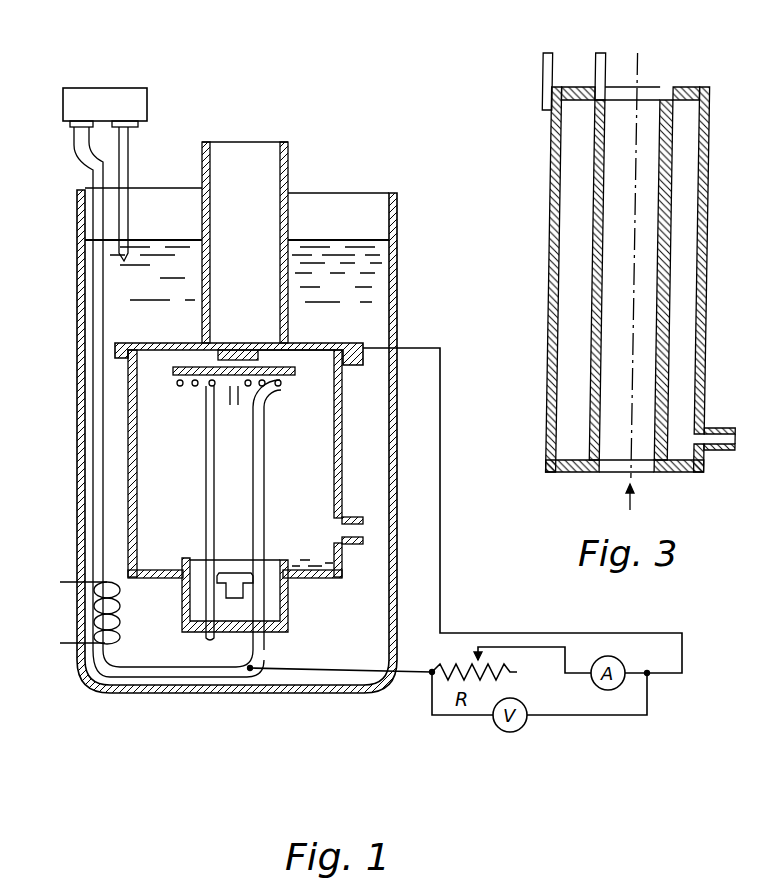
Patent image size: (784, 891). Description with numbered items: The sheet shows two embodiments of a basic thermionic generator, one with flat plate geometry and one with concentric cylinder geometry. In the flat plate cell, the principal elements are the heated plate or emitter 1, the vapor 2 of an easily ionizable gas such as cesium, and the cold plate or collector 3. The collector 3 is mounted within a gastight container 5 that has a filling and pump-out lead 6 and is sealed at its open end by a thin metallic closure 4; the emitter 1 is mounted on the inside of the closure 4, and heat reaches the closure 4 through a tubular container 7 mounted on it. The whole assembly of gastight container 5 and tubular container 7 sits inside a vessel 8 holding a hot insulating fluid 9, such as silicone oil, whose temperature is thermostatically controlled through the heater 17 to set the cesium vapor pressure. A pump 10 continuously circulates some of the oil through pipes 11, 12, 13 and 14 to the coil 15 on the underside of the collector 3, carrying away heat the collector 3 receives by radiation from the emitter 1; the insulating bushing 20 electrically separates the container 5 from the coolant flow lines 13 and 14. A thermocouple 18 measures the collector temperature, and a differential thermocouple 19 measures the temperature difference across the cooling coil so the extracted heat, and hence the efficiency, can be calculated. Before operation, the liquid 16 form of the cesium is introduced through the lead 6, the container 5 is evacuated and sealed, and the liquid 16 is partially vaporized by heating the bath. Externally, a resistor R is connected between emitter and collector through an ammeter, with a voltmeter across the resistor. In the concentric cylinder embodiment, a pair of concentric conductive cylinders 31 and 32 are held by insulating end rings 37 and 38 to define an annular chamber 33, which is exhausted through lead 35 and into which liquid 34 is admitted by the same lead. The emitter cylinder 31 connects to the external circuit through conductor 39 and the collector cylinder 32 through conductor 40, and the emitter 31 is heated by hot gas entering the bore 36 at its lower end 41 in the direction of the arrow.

In FIG. 1, the heated plate (emitter) 1 is at (238, 350).
In FIG. 1, the vapor 2 is at (275, 358).
In FIG. 1, the cold plate (collector) 3 is at (175, 370).
In FIG. 1, the closure 4 is at (115, 346).
In FIG. 1, the gastight container 5 is at (343, 413).
In FIG. 1, the filling and pump-out lead 6 is at (346, 542).
In FIG. 1, the tubular container 7 is at (288, 165).
In FIG. 1, the vessel 8 is at (398, 258).
In FIG. 1, the hot insulating fluid 9 is at (322, 240).
In FIG. 1, the pump 10 is at (147, 106).
In FIG. 1, the pipe 11 is at (130, 170).
In FIG. 1, the pipe 12 is at (85, 152).
In FIG. 1, the pipe (coolant flow line) 13 is at (266, 470).
In FIG. 1, the pipe (coolant flow line) 14 is at (204, 474).
In FIG. 1, the coil 15 is at (193, 387).
In FIG. 1, the liquid 16 is at (315, 565).
In FIG. 1, the heater 17 is at (66, 582).
In FIG. 1, the thermocouple 18 is at (229, 408).
In FIG. 1, the differential thermocouple 19 is at (247, 592).
In FIG. 1, the insulating bushing 20 is at (181, 600).
In FIG. 3, the emitter cylinder 31 is at (595, 163).
In FIG. 3, the collector cylinder 32 is at (551, 200).
In FIG. 3, the annular chamber 33 is at (698, 224).
In FIG. 3, the liquid 34 is at (598, 460).
In FIG. 3, the lead 35 is at (720, 430).
In FIG. 3, the bore 36 is at (607, 319).
In FIG. 3, the insulating end ring 37 is at (680, 473).
In FIG. 3, the insulating end ring 38 is at (688, 92).
In FIG. 3, the conductor 39 is at (603, 52).
In FIG. 3, the conductor 40 is at (543, 72).
In FIG. 3, the lower end 41 is at (624, 478).